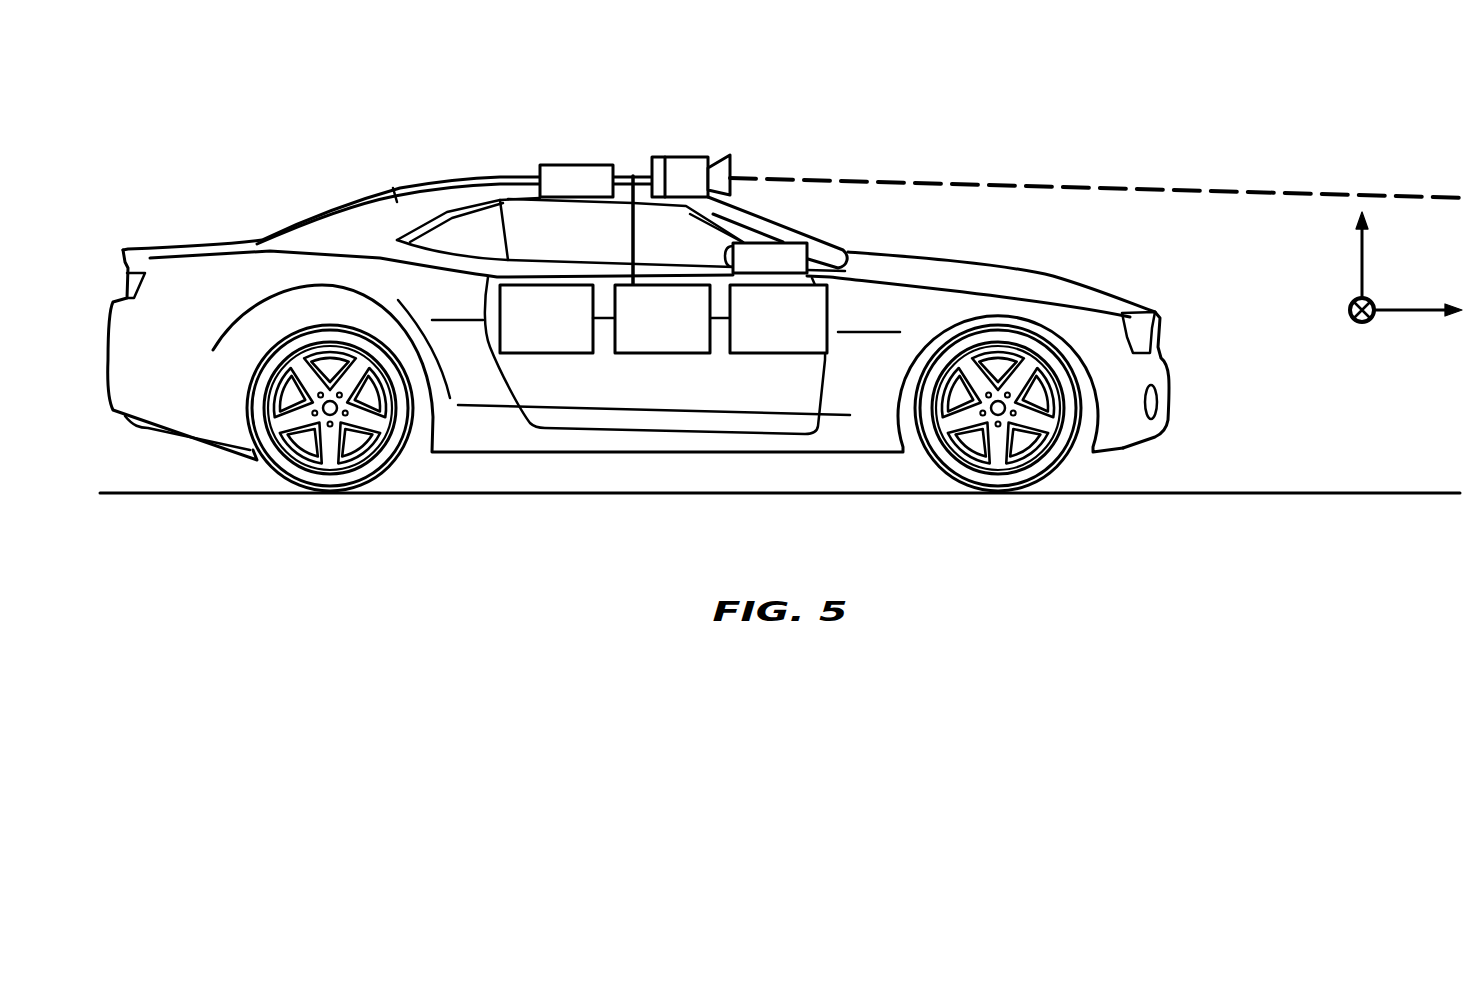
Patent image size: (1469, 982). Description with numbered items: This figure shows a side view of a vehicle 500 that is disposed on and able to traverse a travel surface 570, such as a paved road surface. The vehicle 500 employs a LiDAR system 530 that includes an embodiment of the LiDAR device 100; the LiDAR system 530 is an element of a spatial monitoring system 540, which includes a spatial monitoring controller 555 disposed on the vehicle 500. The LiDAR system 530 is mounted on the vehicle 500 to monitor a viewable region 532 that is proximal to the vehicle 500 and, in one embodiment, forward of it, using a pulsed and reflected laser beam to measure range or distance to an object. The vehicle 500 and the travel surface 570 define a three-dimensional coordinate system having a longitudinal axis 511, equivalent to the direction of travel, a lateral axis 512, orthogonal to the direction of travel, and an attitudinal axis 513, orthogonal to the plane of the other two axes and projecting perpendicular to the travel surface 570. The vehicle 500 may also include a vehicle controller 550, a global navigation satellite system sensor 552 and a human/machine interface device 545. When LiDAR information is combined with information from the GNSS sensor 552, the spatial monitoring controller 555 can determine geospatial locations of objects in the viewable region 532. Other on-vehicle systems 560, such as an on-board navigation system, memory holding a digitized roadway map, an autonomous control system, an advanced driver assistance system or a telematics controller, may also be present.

The LiDAR device 100 is at (730, 140).
The vehicle 500 is at (1052, 256).
The longitudinal axis 511 is at (1423, 355).
The lateral axis 512 is at (1382, 361).
The attitudinal axis 513 is at (1353, 245).
The LiDAR system 530 is at (667, 145).
The viewable region 532 is at (923, 180).
The spatial monitoring system 540 is at (652, 165).
The human/machine interface (HMI) device 545 is at (815, 252).
The vehicle controller 550 is at (525, 333).
The global navigation satellite system (GNSS) sensor 552 is at (540, 168).
The spatial monitoring controller 555 is at (641, 333).
The other on-vehicle systems 560 is at (758, 333).
The travel surface 570 is at (1252, 492).